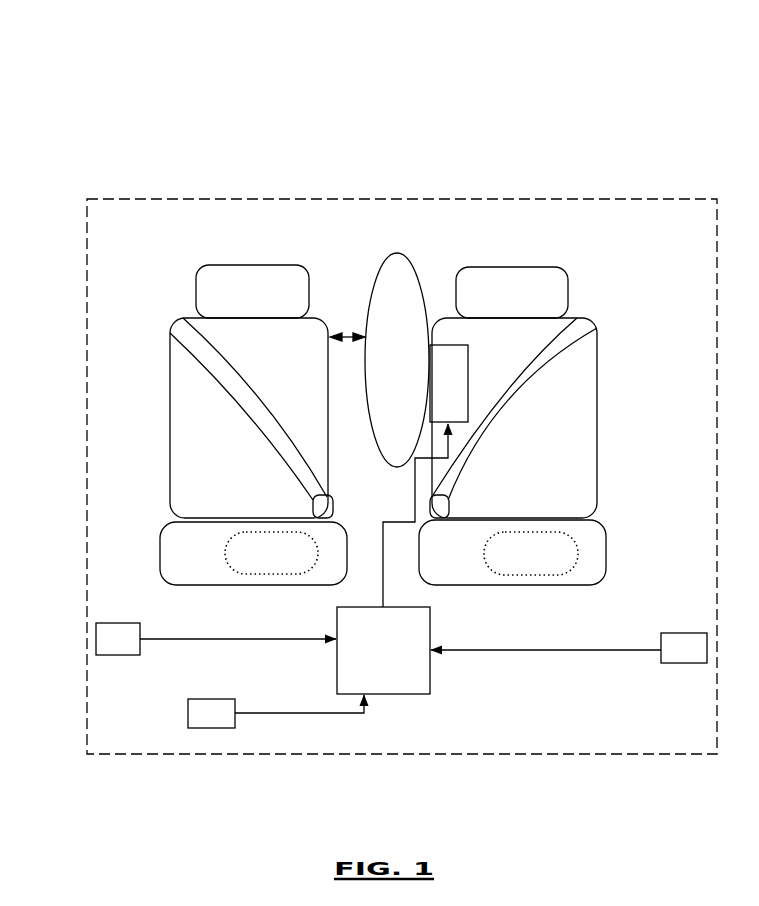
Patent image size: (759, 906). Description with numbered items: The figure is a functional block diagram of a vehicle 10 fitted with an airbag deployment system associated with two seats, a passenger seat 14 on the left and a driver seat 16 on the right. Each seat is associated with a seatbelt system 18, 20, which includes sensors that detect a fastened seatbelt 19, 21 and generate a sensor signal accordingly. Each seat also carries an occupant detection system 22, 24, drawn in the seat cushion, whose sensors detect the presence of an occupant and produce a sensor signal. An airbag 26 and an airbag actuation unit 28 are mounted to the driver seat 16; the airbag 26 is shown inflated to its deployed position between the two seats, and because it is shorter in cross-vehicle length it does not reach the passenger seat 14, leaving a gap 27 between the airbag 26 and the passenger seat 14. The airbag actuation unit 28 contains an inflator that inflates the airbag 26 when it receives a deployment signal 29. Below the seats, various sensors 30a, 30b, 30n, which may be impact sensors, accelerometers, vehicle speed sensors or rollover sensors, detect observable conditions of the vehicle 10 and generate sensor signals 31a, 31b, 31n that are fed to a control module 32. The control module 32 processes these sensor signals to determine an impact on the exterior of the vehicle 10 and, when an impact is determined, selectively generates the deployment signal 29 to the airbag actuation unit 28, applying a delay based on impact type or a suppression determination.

The vehicle 10 is at (478, 138).
The passenger seat 14 is at (138, 403).
The driver seat 16 is at (630, 402).
The seatbelt system 18 is at (224, 487).
The fastened seatbelt 19 is at (212, 381).
The seatbelt system 20 is at (535, 471).
The fastened seatbelt 21 is at (563, 352).
The occupant detection system 22 is at (259, 564).
The occupant detection system 24 is at (519, 564).
The airbag 26 is at (425, 289).
The gap 27 is at (352, 327).
The airbag actuation unit 28 is at (459, 371).
The deployment signal 29 is at (383, 570).
The sensor 30a is at (101, 649).
The sensor 30b is at (194, 724).
The sensor 30n is at (667, 658).
The sensor signal 31a is at (202, 639).
The sensor signal 31b is at (304, 713).
The sensor signal 31n is at (545, 650).
The control module 32 is at (371, 660).